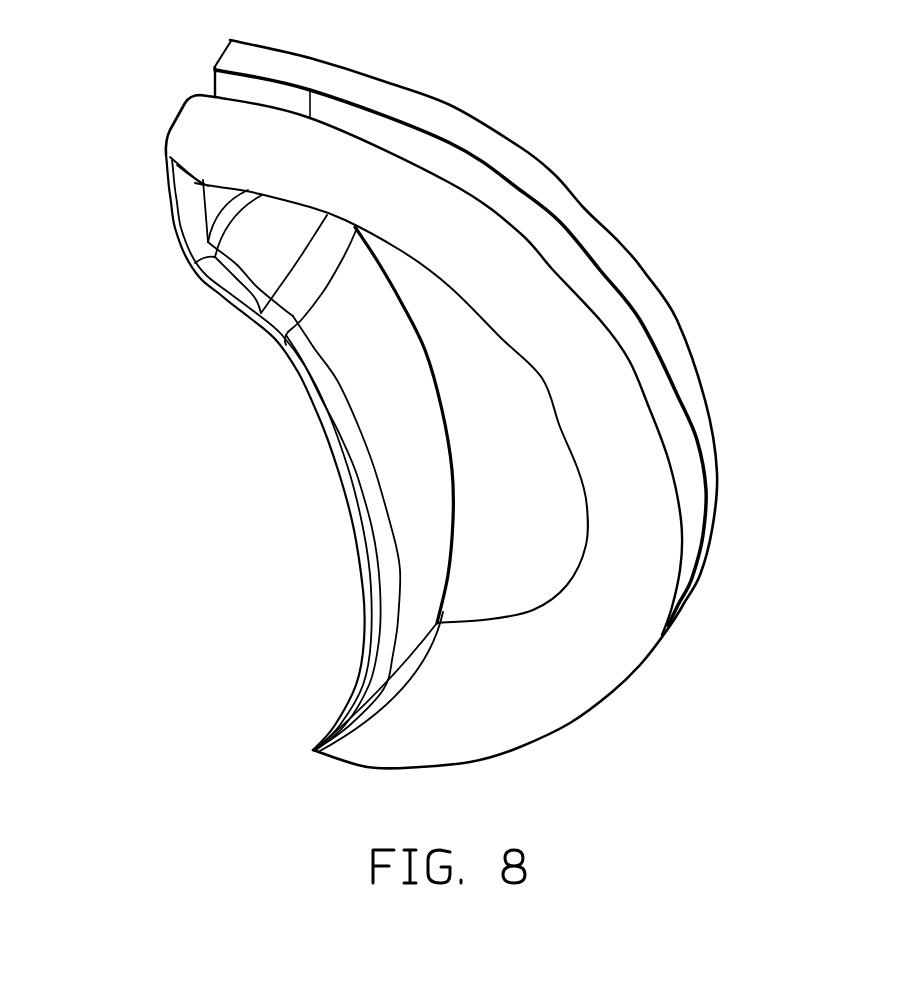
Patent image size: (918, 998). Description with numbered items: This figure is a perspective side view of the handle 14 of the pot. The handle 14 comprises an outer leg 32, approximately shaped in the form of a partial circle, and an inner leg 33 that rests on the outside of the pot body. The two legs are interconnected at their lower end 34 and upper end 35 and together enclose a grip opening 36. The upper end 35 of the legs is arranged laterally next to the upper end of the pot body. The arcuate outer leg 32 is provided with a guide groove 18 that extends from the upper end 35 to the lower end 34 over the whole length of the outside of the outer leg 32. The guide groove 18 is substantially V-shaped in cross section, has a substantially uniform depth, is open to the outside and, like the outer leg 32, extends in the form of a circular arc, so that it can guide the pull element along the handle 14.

The handle 14 is at (640, 692).
The guide groove 18 is at (500, 193).
The outer leg 32 is at (647, 522).
The inner leg 33 is at (385, 550).
The lower end 34 is at (313, 750).
The upper end 35 is at (156, 148).
The grip opening 36 is at (532, 488).